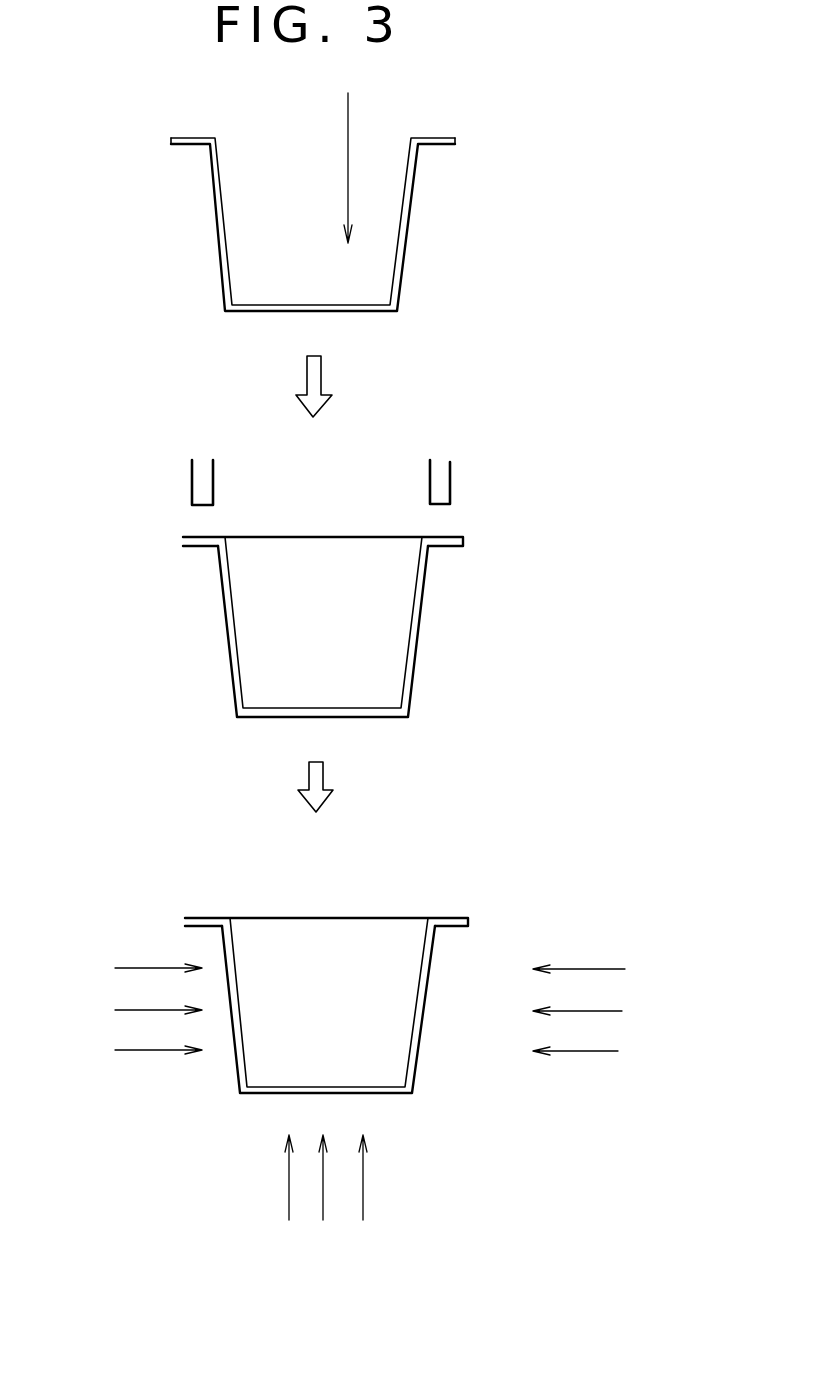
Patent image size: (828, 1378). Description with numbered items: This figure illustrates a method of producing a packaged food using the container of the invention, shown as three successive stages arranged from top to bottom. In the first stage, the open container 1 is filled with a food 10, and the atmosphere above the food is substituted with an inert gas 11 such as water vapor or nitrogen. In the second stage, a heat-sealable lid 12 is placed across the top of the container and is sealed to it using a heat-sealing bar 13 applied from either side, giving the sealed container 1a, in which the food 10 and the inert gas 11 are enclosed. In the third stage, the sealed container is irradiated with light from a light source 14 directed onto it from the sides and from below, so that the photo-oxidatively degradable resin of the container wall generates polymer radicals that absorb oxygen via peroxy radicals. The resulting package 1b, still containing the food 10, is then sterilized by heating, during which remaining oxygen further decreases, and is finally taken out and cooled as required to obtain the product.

The container 1 is at (327, 336).
The sealed container 1a is at (417, 645).
The package 1b is at (428, 1005).
The food 10 is at (338, 586).
The inert gas 11 is at (250, 124).
The heat-sealable lid 12 is at (318, 534).
The heat-sealing bar 13 is at (198, 472).
The light source 14 is at (374, 1116).